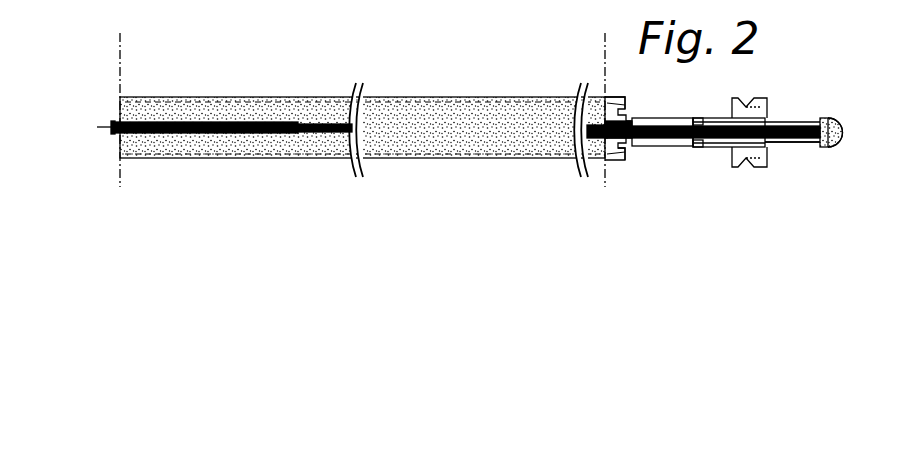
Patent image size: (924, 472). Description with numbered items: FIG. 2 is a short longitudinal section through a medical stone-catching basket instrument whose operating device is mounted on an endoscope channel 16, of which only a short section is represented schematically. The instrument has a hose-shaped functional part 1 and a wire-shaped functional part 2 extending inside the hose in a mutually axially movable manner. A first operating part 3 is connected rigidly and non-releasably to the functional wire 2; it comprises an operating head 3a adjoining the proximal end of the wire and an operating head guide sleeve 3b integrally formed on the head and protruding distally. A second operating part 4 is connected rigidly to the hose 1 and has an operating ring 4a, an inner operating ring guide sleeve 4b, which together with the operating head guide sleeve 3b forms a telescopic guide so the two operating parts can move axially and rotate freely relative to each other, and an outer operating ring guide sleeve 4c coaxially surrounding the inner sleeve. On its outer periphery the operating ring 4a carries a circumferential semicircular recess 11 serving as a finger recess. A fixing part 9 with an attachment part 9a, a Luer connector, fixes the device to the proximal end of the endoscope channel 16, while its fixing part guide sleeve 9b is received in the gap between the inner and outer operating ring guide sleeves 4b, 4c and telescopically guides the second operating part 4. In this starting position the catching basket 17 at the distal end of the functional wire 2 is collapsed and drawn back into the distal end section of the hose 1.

The hose-shaped functional part 1 is at (253, 121).
The wire-shaped functional part 2 is at (787, 127).
The first operating part 3 is at (816, 116).
The operating head 3a is at (832, 148).
The operating head guide sleeve 3b is at (786, 143).
The second operating part 4 is at (718, 176).
The operating ring 4a is at (750, 170).
The operating ring guide sleeve 4b is at (716, 150).
The outer operating ring guide sleeve 4c is at (724, 118).
The fixing part 9 is at (617, 176).
The attachment part 9a is at (630, 110).
The fixing part guide sleeve 9b is at (655, 147).
The recess 11 is at (745, 103).
The endoscope channel 16 is at (445, 160).
The catching basket 17 is at (116, 131).